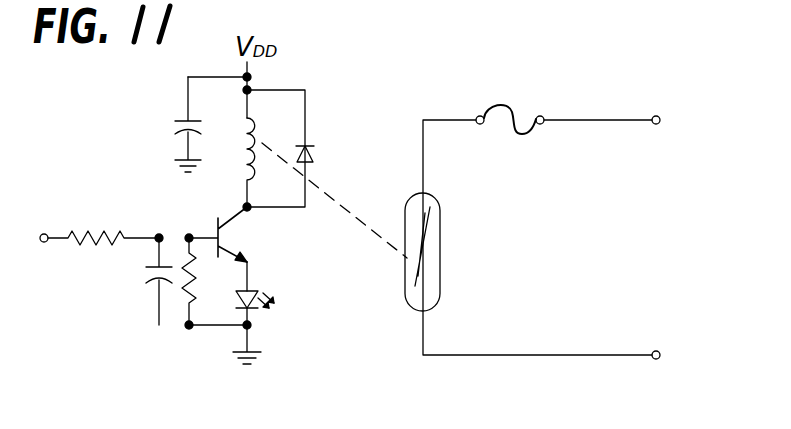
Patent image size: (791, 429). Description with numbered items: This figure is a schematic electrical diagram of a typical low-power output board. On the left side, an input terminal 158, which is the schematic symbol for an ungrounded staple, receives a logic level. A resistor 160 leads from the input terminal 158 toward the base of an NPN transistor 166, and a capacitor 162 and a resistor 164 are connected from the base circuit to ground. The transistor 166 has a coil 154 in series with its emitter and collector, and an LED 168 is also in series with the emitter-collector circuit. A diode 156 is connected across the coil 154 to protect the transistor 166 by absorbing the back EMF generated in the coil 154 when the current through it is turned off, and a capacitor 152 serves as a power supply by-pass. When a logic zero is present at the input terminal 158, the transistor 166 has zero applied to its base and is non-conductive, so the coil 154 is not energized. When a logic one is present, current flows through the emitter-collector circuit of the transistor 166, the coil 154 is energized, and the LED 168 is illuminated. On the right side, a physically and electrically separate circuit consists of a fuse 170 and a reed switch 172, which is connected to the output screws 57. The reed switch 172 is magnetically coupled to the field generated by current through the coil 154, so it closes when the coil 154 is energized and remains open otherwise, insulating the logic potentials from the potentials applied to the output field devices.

The capacitor 152 is at (173, 120).
The coil 154 is at (248, 165).
The diode 156 is at (314, 157).
The input terminal 158 is at (45, 242).
The resistor 160 is at (123, 232).
The capacitor 162 is at (150, 280).
The resistor 164 is at (193, 304).
The transistor 166 is at (234, 243).
The LED 168 is at (251, 300).
The fuse 170 is at (517, 104).
The reed switch 172 is at (440, 247).
The output screws 57 is at (697, 238).